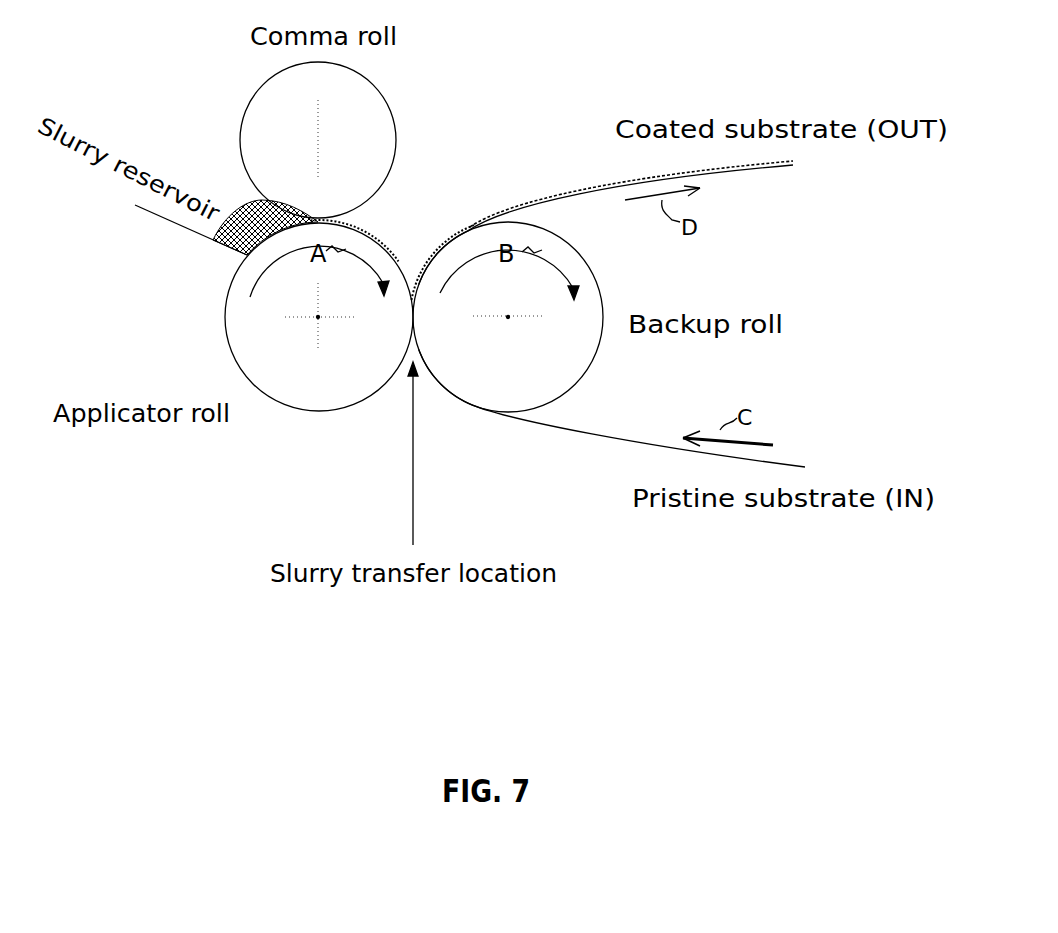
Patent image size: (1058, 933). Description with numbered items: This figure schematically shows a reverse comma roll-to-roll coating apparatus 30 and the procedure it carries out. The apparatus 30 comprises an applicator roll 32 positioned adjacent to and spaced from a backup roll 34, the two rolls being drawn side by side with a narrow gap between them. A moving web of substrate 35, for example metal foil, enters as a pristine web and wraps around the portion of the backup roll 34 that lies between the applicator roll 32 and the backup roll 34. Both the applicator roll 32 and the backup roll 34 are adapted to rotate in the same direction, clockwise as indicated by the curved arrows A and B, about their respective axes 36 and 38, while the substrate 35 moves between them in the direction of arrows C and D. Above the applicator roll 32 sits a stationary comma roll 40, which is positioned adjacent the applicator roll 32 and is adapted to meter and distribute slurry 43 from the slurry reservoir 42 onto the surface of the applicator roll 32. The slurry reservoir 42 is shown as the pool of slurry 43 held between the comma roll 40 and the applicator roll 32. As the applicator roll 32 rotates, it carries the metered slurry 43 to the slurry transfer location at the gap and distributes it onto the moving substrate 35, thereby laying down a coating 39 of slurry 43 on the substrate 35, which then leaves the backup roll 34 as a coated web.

The apparatus 30 is at (600, 88).
The applicator roll 32 is at (286, 389).
The backup roll 34 is at (553, 380).
The substrate 35 is at (555, 440).
The axis 36 is at (318, 318).
The axis 38 is at (510, 317).
The coating 39 is at (468, 222).
The comma roll 40 is at (388, 111).
The slurry reservoir 42 is at (205, 222).
The slurry 43 is at (240, 213).